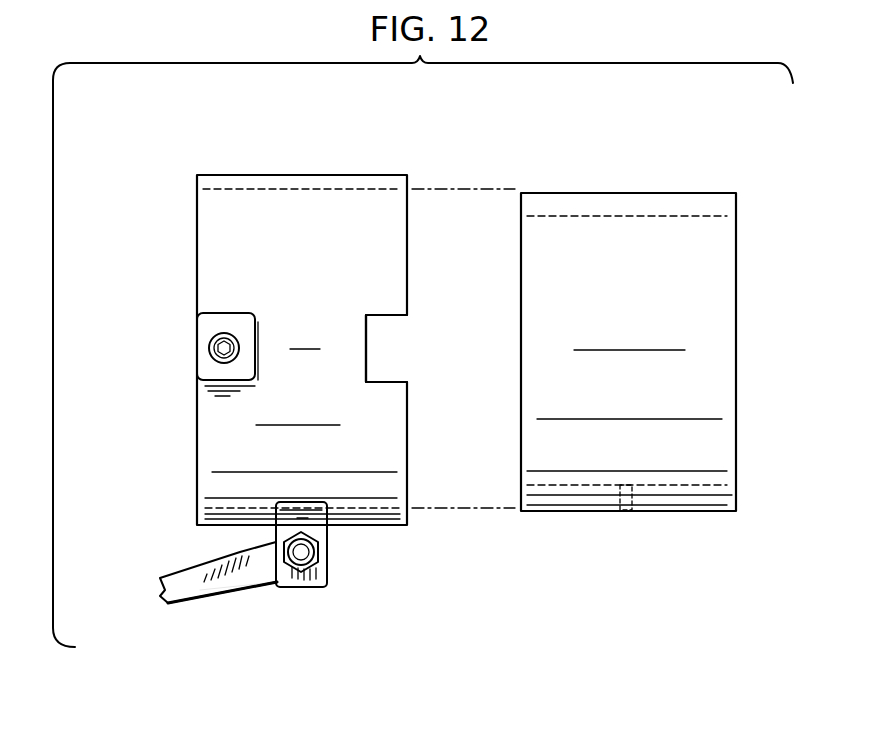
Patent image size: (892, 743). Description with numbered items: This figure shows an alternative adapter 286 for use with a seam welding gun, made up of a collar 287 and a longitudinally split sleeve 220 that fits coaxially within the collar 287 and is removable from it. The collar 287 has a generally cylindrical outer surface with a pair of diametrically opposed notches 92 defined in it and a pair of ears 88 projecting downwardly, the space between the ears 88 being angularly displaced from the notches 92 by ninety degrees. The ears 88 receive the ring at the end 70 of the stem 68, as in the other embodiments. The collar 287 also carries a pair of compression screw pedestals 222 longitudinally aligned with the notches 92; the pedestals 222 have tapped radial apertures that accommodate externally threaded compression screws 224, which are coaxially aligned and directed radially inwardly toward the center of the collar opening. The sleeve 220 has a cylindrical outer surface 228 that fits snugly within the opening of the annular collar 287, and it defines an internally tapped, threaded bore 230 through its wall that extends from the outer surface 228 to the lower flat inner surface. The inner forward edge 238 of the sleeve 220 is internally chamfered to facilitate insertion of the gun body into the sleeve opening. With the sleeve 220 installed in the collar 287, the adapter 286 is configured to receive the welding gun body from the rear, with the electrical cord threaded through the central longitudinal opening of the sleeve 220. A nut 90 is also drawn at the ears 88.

The collar 287 is at (276, 175).
The adapter 286 is at (582, 165).
The longitudinally split sleeve 220 is at (681, 192).
The compression screw pedestals 222 is at (205, 326).
The compression screws 224 is at (213, 356).
The notches 92 is at (367, 343).
The inner forward edge 238 is at (737, 369).
The outer surface 228 is at (668, 447).
The threaded bore 230 is at (627, 512).
The ears 88 is at (298, 587).
The nut 90 is at (318, 547).
The stem 68 is at (180, 587).
The end 70 is at (255, 572).